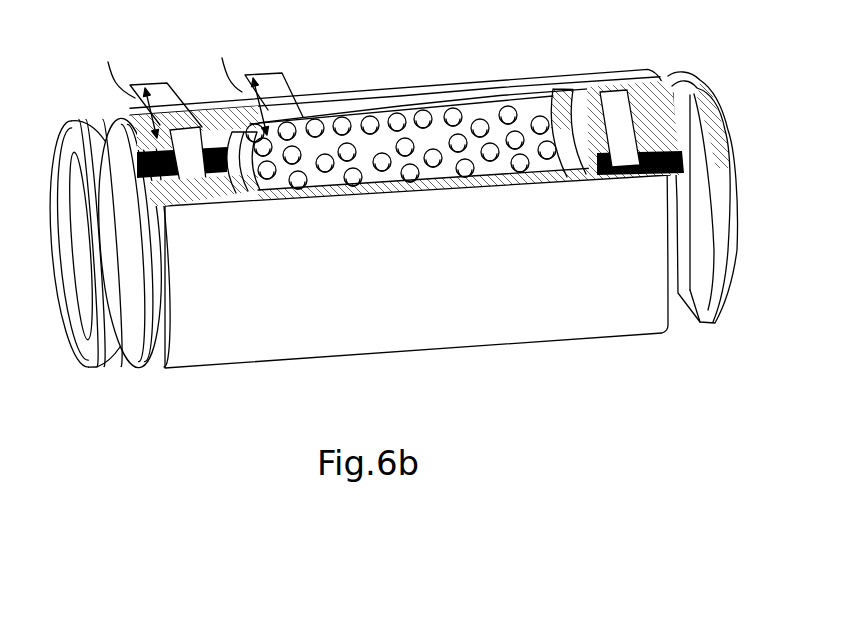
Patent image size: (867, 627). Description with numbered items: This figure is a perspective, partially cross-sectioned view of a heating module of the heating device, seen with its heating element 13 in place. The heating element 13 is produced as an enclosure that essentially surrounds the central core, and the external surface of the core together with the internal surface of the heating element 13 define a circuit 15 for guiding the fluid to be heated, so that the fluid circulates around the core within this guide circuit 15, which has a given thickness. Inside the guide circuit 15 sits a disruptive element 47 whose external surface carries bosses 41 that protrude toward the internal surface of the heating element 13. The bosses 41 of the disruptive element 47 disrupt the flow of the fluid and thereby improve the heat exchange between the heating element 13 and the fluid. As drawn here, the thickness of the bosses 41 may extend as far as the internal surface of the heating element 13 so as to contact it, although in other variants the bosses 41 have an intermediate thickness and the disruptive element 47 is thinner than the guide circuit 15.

The heating element 13 is at (518, 323).
The circuit 15 is at (572, 122).
The bosses 41 is at (323, 168).
The disruptive element 47 is at (401, 150).